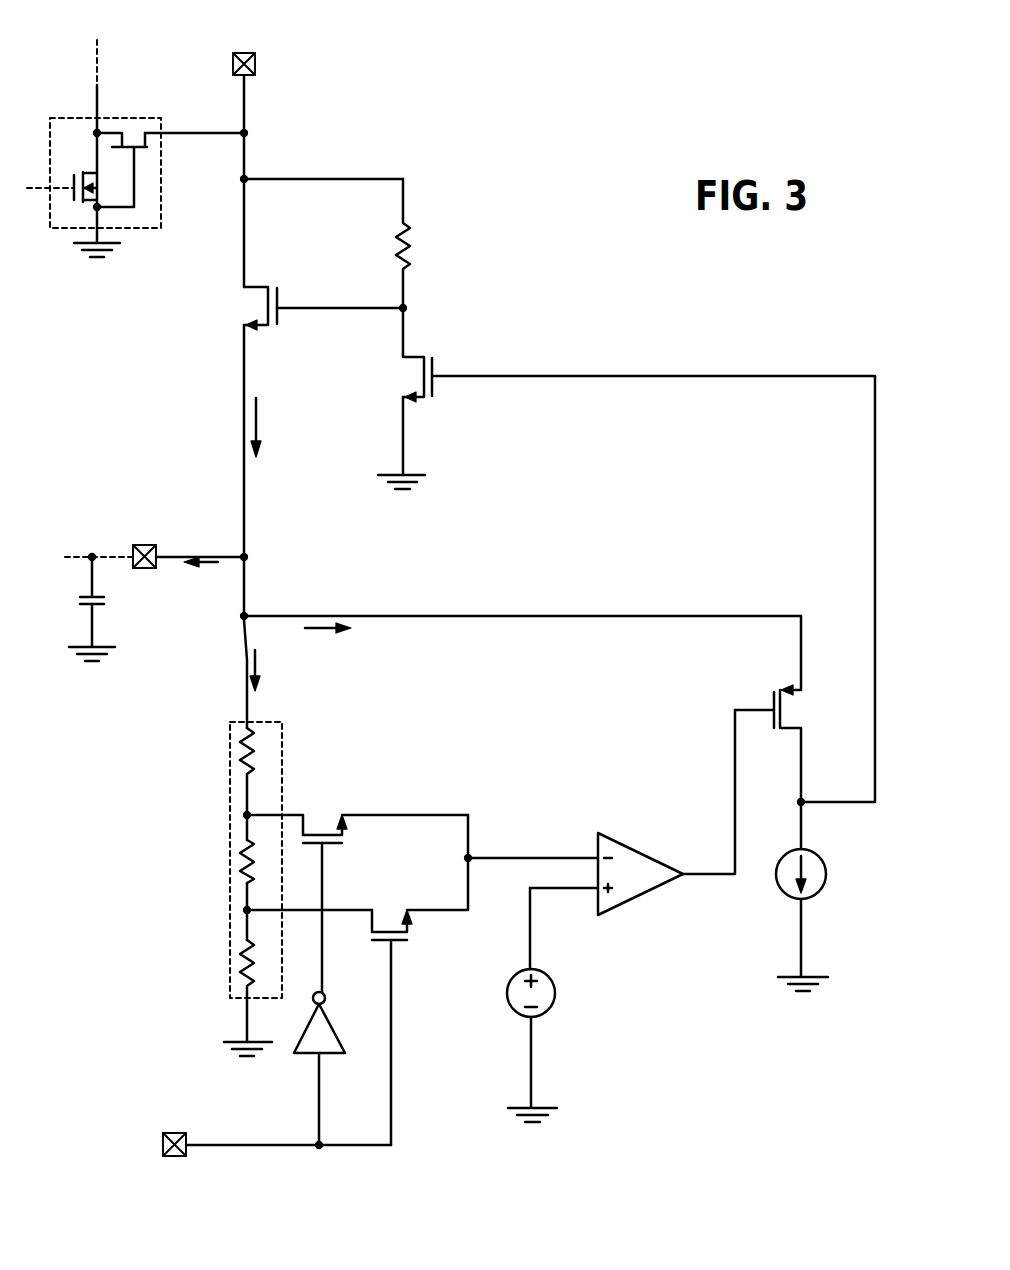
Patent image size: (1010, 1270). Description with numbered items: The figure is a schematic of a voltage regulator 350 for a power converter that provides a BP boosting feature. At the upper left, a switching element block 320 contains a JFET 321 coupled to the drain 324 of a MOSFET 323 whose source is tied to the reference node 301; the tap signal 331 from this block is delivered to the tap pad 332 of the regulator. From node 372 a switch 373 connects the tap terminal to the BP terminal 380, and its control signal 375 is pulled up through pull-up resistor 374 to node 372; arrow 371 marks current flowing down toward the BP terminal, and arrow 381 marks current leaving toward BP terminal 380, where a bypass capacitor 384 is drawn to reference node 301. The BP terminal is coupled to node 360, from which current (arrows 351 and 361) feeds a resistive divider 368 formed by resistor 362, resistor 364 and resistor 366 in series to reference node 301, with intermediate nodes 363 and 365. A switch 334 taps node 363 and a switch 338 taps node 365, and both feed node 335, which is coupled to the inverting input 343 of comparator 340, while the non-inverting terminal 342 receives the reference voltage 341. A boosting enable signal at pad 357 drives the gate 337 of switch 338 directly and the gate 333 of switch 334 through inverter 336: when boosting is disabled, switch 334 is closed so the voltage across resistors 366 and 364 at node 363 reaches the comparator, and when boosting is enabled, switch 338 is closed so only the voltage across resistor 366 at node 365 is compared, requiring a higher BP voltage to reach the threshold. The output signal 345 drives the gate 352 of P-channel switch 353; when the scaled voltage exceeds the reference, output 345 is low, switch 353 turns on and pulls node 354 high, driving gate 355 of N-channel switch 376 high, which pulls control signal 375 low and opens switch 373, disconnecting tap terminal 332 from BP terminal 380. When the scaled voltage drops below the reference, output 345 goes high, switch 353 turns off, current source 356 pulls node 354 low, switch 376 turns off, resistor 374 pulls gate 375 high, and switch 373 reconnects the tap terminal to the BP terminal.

The reference node 301 is at (86, 253).
The switching element block 320 is at (66, 128).
The JFET 321 is at (133, 138).
The MOSFET 323 is at (102, 182).
The drain 324 is at (107, 95).
The tap signal 331 is at (180, 127).
The tap pad 332 is at (265, 72).
The gate of transistor MN3 333 is at (328, 848).
The switch MN3 334 is at (365, 783).
The node 335 is at (478, 849).
The inverter 336 is at (355, 1008).
The switch MN4 337 is at (398, 948).
The switch MN4 338 is at (432, 880).
The comparator 340 is at (648, 823).
The reference voltage Vref 341 is at (563, 993).
The non-inverting terminal 342 is at (585, 899).
The inverting input 343 is at (585, 852).
The output signal 345 is at (708, 880).
The voltage regulator 350 is at (473, 33).
The current 351 is at (330, 636).
The gate of switch MP1 352 is at (765, 696).
The switch MP1 353 is at (840, 679).
The node 354 is at (807, 796).
The gate of switch MN2 355 is at (470, 370).
The current source 356 is at (838, 876).
The boosting enable signal pad 357 is at (175, 1131).
The node 360 is at (250, 608).
The current 361 is at (258, 672).
The resistor R3 362 is at (235, 748).
The node 363 is at (235, 812).
The resistor R2 364 is at (237, 866).
The node 365 is at (238, 912).
The resistor R1 366 is at (235, 960).
The resistive divider 368 is at (282, 741).
The current 371 is at (260, 426).
The node 372 is at (252, 168).
The switch MN1 373 is at (270, 262).
The pull up resistor 374 is at (437, 230).
The control signal 375 is at (300, 303).
The switch MN2 376 is at (415, 346).
The BP terminal 380 is at (138, 536).
The current 381 is at (200, 570).
The bypass capacitor 384 is at (75, 601).